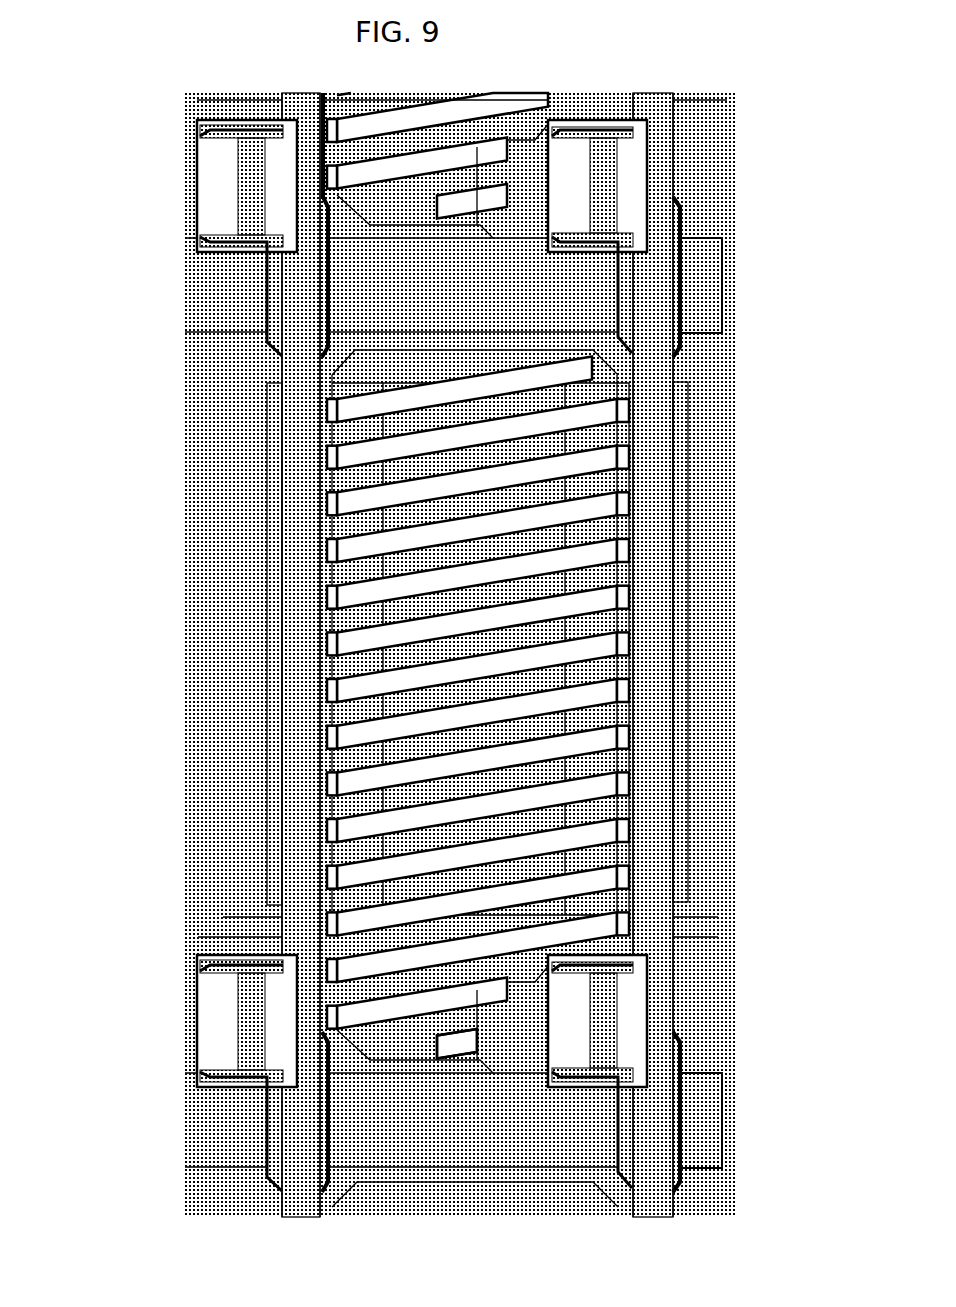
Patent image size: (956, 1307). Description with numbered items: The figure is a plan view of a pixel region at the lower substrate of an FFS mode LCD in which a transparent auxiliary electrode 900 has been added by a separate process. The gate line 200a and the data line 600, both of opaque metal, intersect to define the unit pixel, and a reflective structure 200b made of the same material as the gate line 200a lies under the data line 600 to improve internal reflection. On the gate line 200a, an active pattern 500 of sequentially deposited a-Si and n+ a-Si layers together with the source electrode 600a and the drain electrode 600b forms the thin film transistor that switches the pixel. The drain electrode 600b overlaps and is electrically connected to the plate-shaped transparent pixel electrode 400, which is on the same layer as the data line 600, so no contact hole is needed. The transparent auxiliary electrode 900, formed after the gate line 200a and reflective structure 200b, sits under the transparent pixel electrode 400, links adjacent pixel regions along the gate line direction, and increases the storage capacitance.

The gate line 200a is at (199, 132).
The reflective structure 200b is at (270, 722).
The transparent pixel electrode 400 is at (632, 584).
The active pattern 500 is at (683, 213).
The data line 600 is at (676, 855).
The source electrode 600a is at (626, 986).
The drain electrode 600b is at (512, 1080).
The transparent auxiliary electrode 900 is at (575, 513).